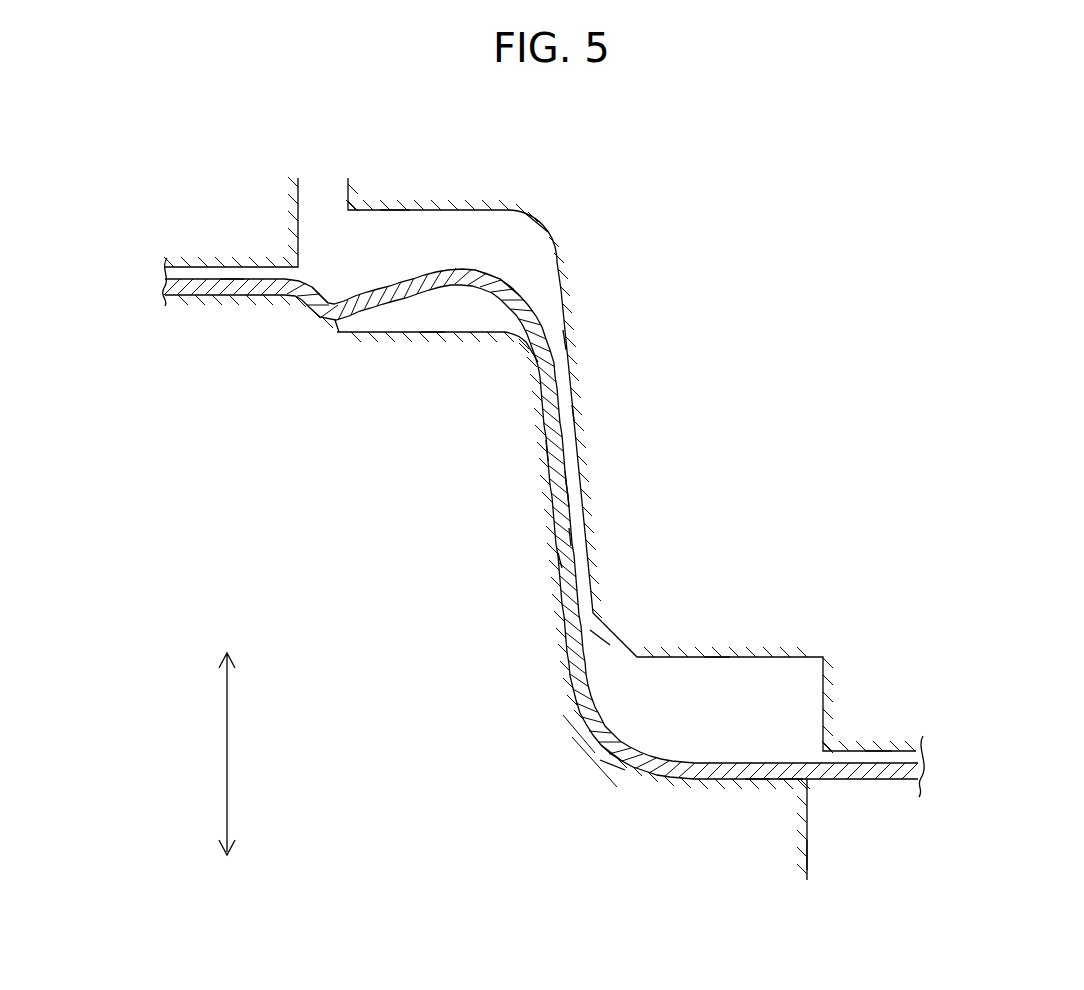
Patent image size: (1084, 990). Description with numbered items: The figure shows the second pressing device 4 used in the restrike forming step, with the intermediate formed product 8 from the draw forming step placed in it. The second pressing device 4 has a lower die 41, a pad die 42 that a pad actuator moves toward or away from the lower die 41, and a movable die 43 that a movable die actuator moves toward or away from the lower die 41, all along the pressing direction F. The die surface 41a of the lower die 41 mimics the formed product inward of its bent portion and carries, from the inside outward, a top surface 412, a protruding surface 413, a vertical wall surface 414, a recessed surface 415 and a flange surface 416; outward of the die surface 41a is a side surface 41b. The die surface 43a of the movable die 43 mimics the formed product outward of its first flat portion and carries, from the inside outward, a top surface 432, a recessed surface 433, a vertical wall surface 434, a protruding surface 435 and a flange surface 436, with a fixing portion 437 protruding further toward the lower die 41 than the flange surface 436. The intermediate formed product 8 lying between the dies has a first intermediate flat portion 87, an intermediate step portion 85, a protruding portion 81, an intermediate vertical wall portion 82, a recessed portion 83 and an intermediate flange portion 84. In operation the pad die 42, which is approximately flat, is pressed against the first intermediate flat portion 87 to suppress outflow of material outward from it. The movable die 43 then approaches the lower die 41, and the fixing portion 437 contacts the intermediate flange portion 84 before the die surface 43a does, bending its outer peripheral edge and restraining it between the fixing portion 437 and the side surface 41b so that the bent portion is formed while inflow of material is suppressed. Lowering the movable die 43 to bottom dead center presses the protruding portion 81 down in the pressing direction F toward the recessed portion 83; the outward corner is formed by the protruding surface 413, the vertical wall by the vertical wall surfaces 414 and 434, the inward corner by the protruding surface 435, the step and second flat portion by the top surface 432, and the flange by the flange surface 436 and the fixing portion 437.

The second pressing device 4 is at (806, 150).
The intermediate formed product 8 is at (163, 293).
The protruding portion 81 is at (510, 285).
The intermediate vertical wall portion 82 is at (568, 490).
The recessed portion 83 is at (612, 753).
The intermediate flange portion 84 is at (792, 770).
The intermediate step portion 85 is at (326, 298).
The first intermediate flat portion 87 is at (232, 292).
The lower die 41 is at (402, 630).
The die surface 41a is at (570, 537).
The side surface 41b is at (808, 855).
The pad die 42 is at (240, 197).
The movable die 43 is at (792, 380).
The die surface 43a is at (562, 560).
The top surface 412 is at (432, 332).
The protruding surface 413 is at (528, 343).
The vertical wall surface 414 is at (545, 417).
The recessed surface 415 is at (612, 767).
The flange surface 416 is at (758, 775).
The top surface 432 is at (394, 212).
The recessed surface 433 is at (536, 220).
The vertical wall surface 434 is at (548, 455).
The protruding surface 435 is at (603, 640).
The flange surface 436 is at (718, 657).
The fixing portion 437 is at (878, 751).
The pressing direction F is at (229, 745).